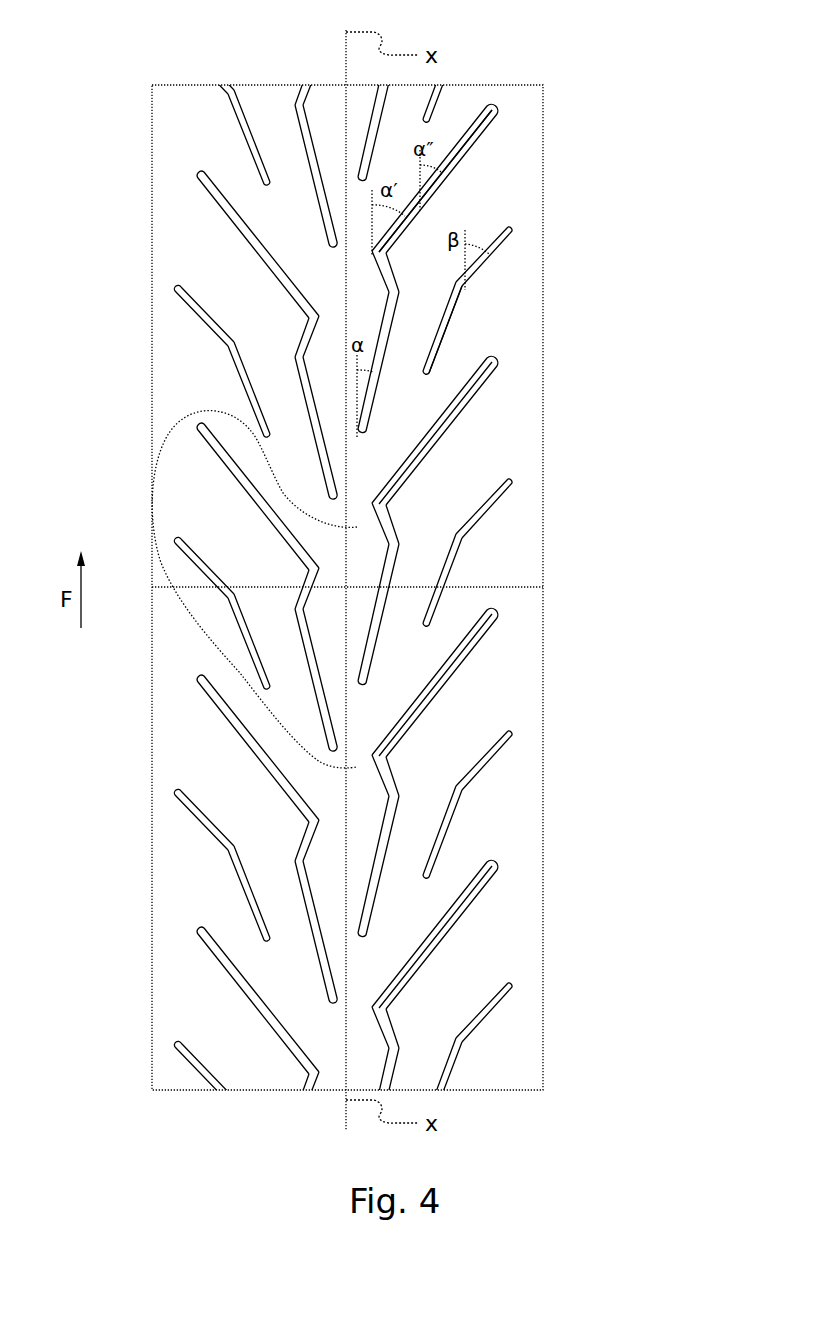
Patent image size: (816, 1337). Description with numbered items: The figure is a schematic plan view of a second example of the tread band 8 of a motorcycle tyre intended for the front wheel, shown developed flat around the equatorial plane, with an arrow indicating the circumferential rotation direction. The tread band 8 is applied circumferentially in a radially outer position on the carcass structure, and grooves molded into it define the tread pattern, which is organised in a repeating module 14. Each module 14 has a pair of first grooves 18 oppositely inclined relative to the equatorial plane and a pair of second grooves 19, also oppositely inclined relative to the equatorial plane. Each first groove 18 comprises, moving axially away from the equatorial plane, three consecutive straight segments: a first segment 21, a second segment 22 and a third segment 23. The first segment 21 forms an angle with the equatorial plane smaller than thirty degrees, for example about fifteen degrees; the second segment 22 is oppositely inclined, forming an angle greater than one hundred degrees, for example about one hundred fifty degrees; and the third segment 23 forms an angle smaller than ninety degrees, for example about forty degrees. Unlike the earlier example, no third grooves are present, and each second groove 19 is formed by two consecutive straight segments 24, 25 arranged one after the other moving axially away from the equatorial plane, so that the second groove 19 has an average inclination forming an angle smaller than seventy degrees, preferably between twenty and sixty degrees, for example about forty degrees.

The tread band 8 is at (560, 119).
The module 14 is at (350, 762).
The first groove 18 is at (450, 144).
The second groove 19 is at (461, 284).
The first segment 21 is at (357, 527).
The second segment 22 is at (392, 266).
The third segment 23 is at (440, 203).
The segment 24 is at (432, 386).
The segment 25 is at (495, 242).